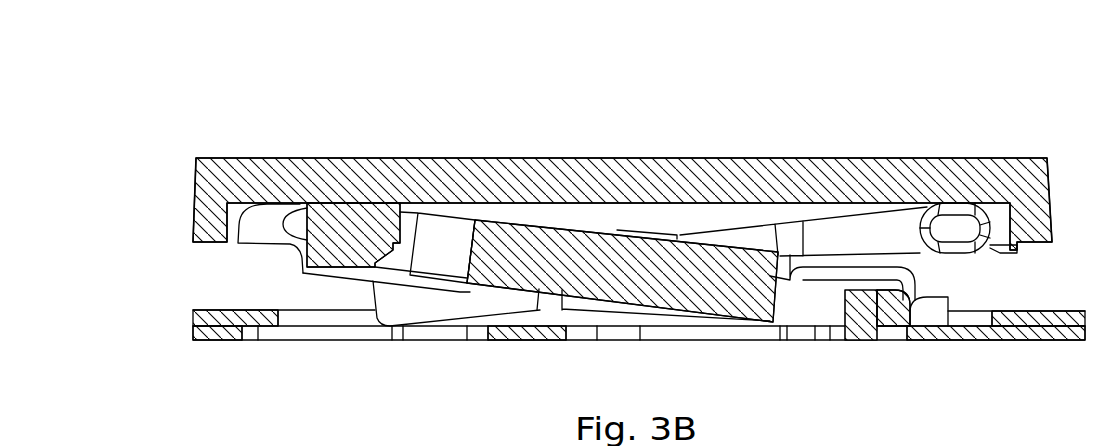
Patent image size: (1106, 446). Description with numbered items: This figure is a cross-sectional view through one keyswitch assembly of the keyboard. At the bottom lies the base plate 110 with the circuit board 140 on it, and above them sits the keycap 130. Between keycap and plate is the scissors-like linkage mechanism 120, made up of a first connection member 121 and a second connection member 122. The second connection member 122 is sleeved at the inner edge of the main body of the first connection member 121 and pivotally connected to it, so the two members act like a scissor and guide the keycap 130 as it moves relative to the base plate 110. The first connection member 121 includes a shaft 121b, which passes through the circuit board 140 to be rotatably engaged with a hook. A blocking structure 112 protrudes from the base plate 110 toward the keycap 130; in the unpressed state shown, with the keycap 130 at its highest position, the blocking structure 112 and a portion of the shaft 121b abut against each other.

The base plate 110 is at (193, 333).
The blocking structure 112 is at (857, 323).
The scissors-like linkage mechanism 120 is at (778, 93).
The first connection member 121 is at (577, 245).
The shaft 121b is at (897, 313).
The second connection member 122 is at (742, 237).
The keycap 130 is at (353, 158).
The circuit board 140 is at (193, 320).